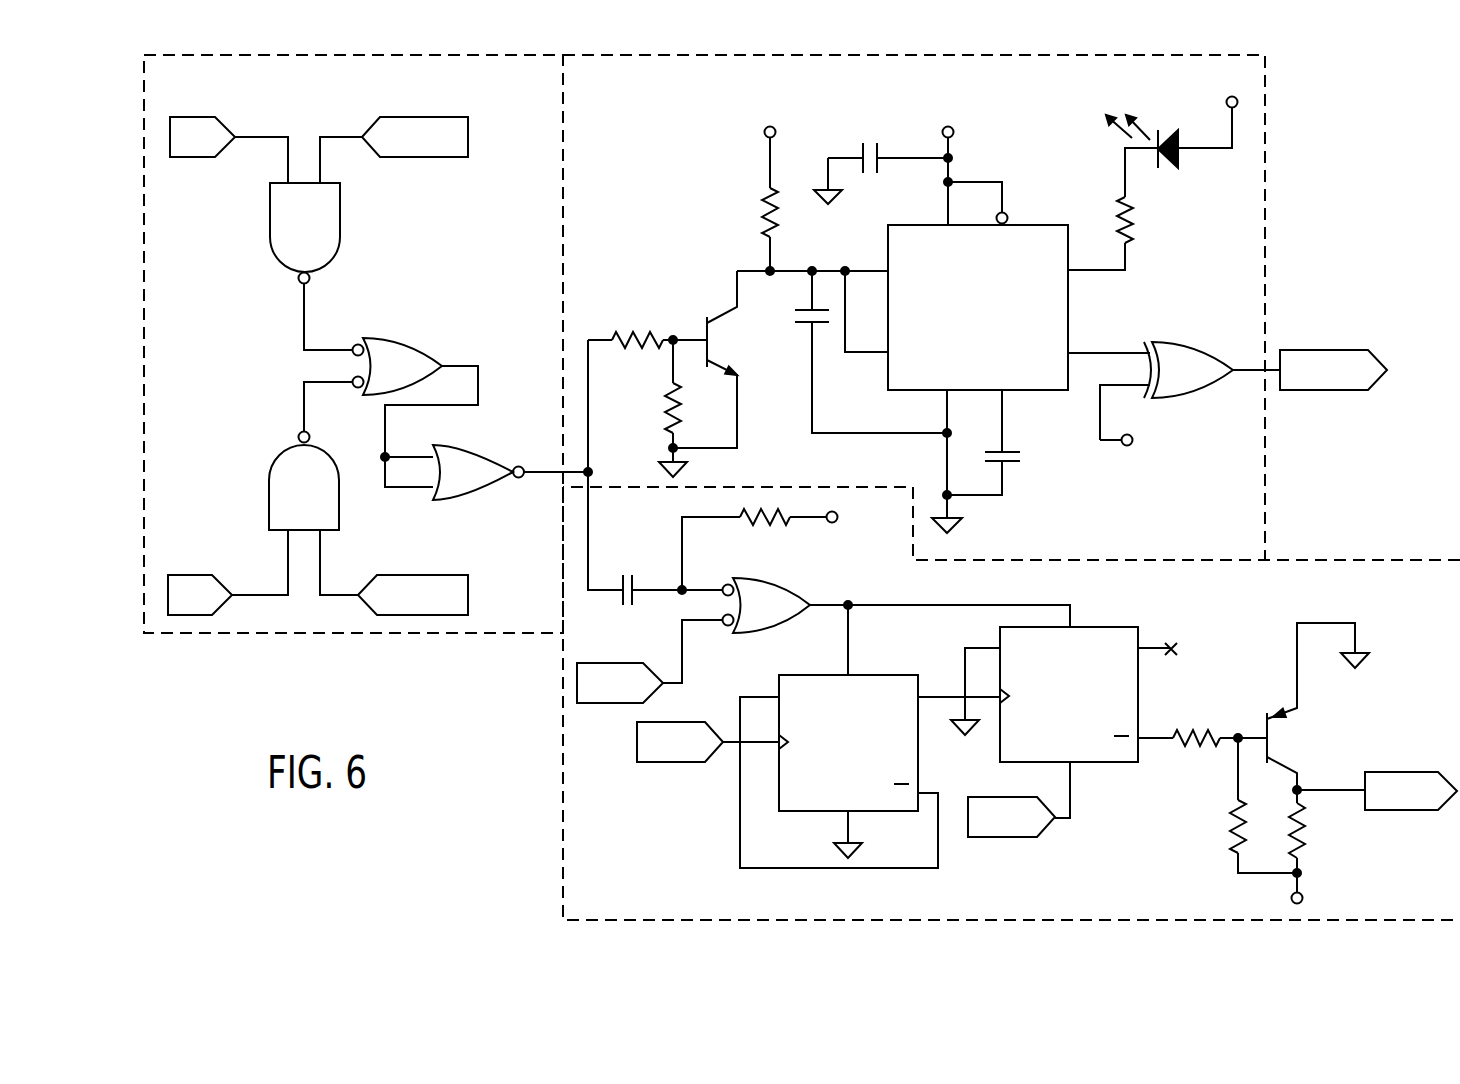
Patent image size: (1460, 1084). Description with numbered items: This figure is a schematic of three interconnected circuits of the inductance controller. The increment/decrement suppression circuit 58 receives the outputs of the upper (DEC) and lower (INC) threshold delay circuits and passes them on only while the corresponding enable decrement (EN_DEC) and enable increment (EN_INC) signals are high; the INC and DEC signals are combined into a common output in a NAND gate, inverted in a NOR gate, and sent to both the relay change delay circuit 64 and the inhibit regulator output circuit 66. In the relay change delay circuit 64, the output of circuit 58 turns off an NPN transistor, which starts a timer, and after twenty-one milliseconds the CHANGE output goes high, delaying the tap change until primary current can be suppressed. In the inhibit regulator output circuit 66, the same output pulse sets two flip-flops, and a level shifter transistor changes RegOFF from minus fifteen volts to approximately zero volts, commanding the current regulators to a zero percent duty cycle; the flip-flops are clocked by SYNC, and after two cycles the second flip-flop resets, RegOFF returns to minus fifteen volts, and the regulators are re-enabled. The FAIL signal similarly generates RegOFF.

The increment/decrement suppression circuit 58 is at (277, 650).
The relay change delay circuit 64 is at (1291, 189).
The inhibit regulator output circuit 66 is at (553, 726).